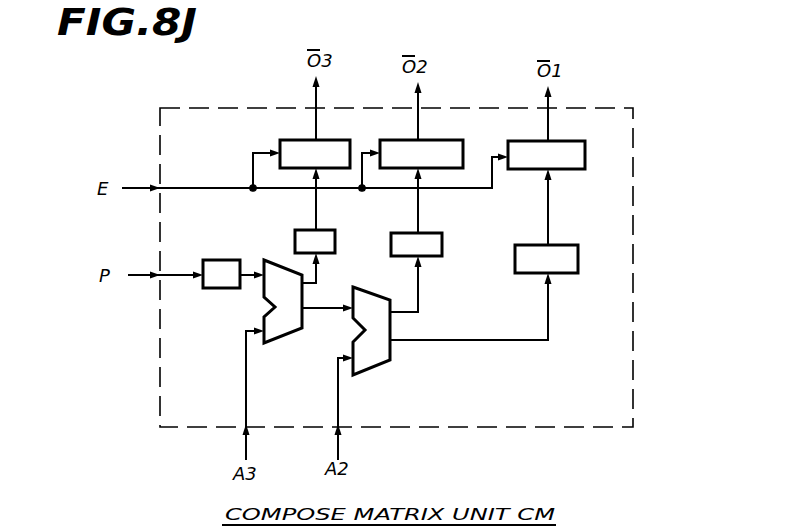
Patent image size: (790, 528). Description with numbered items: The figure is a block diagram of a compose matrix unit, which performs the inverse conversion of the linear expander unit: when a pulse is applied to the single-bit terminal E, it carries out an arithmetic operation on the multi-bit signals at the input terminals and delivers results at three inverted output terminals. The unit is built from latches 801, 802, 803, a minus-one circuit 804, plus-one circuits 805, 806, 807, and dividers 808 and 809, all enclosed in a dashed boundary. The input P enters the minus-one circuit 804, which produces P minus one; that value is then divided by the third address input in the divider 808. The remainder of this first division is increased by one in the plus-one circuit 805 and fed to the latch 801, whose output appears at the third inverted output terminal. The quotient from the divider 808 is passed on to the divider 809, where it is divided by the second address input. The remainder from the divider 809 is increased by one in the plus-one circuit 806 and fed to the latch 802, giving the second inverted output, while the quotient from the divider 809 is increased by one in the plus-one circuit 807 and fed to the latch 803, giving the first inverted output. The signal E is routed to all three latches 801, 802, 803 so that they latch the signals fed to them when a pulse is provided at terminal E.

The latch 801 is at (295, 141).
The latch 802 is at (410, 126).
The latch 803 is at (542, 125).
The minus-one circuit 804 is at (205, 289).
The plus-one circuit 805 is at (303, 231).
The plus-one circuit 806 is at (406, 234).
The plus-one circuit 807 is at (540, 245).
The divider 808 is at (263, 346).
The divider 809 is at (365, 371).